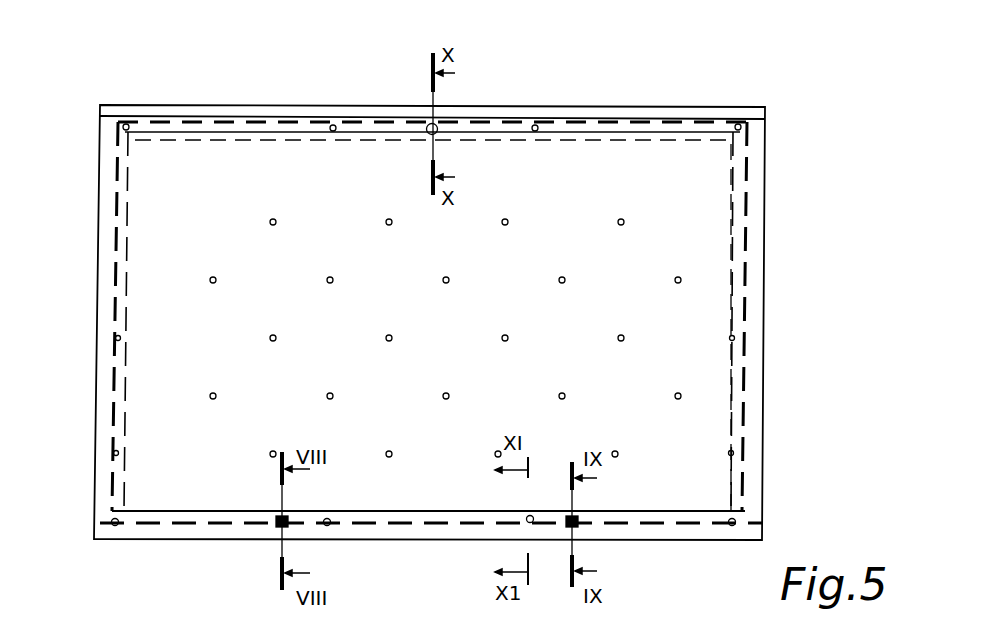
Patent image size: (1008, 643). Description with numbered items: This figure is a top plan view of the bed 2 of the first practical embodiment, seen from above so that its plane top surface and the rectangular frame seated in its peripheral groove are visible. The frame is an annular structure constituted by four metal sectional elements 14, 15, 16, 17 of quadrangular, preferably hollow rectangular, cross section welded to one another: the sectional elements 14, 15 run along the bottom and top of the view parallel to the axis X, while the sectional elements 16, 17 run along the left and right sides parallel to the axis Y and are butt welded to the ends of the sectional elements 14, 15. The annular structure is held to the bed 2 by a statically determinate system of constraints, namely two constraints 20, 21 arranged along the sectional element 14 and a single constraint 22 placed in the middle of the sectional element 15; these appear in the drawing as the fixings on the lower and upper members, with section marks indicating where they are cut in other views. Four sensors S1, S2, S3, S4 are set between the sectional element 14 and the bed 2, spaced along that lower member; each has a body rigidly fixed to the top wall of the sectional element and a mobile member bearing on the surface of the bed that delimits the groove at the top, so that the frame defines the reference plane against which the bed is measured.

The bed 2 is at (752, 108).
The sectional element 14 is at (405, 512).
The sectional element 15 is at (525, 127).
The sectional element 16 is at (108, 345).
The sectional element 17 is at (722, 334).
The constraint 20 is at (268, 527).
The constraint 21 is at (578, 525).
The constraint 22 is at (428, 124).
The sensor S1 is at (115, 540).
The sensor S2 is at (329, 528).
The sensor S3 is at (532, 526).
The sensor S4 is at (732, 540).